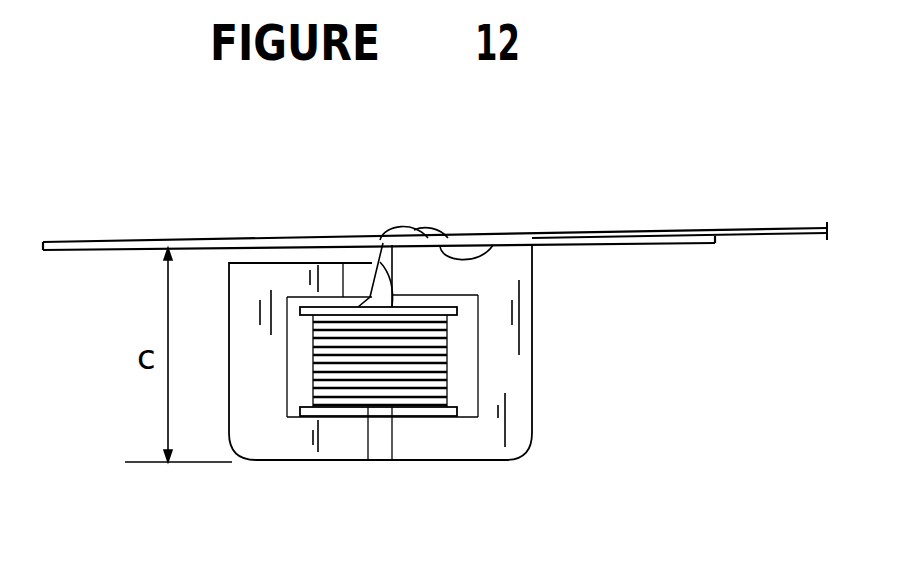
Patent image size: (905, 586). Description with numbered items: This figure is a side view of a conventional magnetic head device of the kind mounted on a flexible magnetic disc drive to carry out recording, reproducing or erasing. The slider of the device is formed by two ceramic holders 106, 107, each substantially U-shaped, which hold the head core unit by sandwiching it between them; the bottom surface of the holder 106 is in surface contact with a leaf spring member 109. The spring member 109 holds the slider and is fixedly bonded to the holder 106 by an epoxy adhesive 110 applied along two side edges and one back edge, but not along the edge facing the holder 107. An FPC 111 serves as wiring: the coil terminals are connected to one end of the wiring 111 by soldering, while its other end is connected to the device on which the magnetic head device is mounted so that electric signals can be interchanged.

The holder 106 is at (445, 461).
The holder 107 is at (297, 461).
The spring member 109 is at (108, 242).
The epoxy adhesive 110 is at (470, 250).
The FPC (wiring) 111 is at (752, 228).